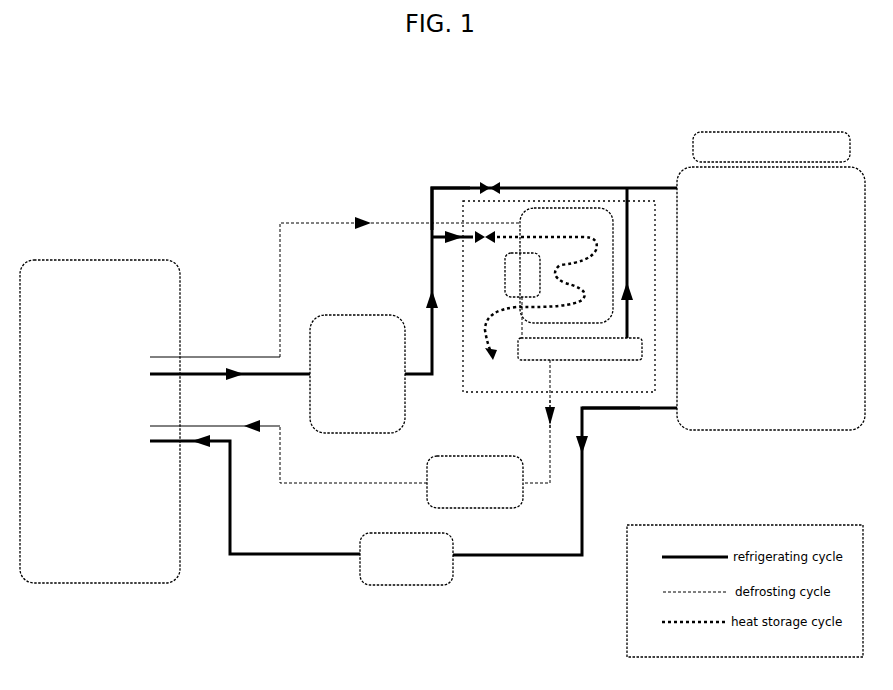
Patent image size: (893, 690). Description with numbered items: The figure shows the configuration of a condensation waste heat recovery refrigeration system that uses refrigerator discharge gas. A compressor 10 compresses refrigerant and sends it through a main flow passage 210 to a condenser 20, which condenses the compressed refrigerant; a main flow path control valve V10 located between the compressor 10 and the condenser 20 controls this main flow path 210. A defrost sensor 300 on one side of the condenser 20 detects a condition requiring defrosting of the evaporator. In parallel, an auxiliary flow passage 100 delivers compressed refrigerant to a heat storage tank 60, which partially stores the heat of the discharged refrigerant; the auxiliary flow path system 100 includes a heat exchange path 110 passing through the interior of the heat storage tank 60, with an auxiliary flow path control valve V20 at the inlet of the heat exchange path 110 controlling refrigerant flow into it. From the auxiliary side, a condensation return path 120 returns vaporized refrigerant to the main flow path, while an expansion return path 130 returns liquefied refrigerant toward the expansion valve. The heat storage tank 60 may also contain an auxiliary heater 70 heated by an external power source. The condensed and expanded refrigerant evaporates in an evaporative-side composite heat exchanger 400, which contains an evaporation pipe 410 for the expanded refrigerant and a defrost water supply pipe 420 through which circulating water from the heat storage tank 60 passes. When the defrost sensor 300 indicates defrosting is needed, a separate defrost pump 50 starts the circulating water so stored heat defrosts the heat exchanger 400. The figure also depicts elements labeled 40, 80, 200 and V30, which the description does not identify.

The compressor 10 is at (357, 374).
The condenser 20 is at (771, 298).
The expansion valve 40 is at (406, 559).
The defrost pump 50 is at (475, 482).
The heat storage tank 60 is at (566, 265).
The auxiliary heater 70 is at (522, 275).
The heat exchanger 80 is at (580, 349).
The auxiliary flow passage 100 is at (558, 201).
The heat exchange path 110 is at (538, 310).
The condensation return path 120 is at (632, 205).
The expansion return path 130 is at (603, 362).
The outdoor unit 200 is at (771, 298).
The main flow passage 210 is at (432, 203).
The defrost sensor 300 is at (771, 147).
The evaporative-side composite heat exchanger 400 is at (100, 421).
The evaporation pipe 410 is at (167, 442).
The defrost water supply pipe 420 is at (163, 356).
The main flow path control valve V10 is at (488, 184).
The auxiliary flow path control valve V20 is at (465, 243).
The third valve V30 is at (573, 378).